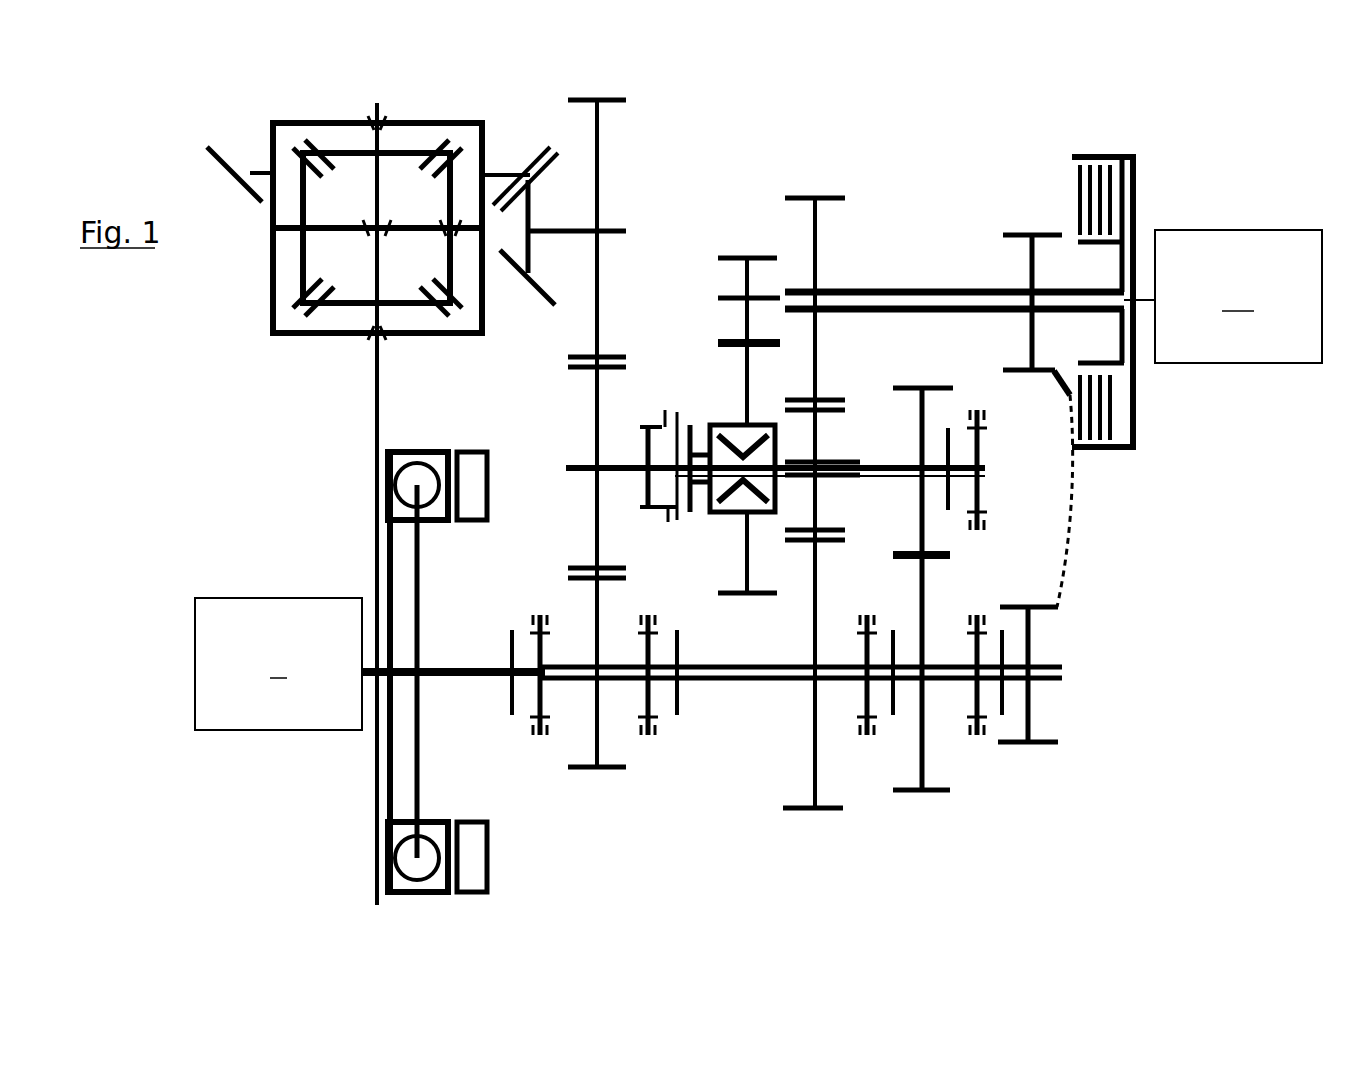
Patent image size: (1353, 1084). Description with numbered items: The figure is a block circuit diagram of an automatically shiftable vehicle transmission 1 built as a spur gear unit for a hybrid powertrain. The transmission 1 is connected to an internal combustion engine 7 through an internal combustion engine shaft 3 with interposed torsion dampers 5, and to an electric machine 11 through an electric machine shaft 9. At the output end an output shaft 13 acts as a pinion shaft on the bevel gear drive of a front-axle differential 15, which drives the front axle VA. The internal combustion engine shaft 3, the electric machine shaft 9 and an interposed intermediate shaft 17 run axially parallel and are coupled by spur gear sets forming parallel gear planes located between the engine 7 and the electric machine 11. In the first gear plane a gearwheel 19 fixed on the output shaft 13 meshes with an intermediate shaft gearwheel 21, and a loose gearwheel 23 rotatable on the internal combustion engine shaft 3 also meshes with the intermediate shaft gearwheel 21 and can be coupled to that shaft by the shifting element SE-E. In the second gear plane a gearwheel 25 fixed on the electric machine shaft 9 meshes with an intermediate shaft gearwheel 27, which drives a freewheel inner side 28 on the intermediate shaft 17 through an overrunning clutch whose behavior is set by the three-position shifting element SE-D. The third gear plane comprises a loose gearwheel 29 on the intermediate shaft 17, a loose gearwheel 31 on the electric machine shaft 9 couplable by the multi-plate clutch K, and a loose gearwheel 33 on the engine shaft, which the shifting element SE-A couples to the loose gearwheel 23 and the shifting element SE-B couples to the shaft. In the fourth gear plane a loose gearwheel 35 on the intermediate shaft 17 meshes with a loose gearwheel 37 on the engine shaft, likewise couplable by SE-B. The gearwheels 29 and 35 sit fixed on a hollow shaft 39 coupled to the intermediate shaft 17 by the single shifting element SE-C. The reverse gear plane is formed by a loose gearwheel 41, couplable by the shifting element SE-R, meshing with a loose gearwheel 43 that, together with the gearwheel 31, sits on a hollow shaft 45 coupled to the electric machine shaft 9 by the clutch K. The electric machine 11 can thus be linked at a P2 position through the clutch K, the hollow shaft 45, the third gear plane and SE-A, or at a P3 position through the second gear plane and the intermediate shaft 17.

The vehicle transmission 1 is at (984, 874).
The internal combustion engine shaft 3 is at (465, 667).
The torsion dampers 5 is at (420, 893).
The internal combustion engine 7 is at (278, 664).
The electric machine shaft 9 is at (1143, 295).
The electric machine 11 is at (1238, 296).
The output shaft 13 is at (612, 231).
The front-axle differential 15 is at (308, 123).
The intermediate shaft 17 is at (980, 466).
The gearwheel 19 is at (612, 100).
The intermediate shaft gearwheel 21 is at (596, 418).
The loose gearwheel 23 is at (595, 598).
The gearwheel 25 is at (745, 265).
The intermediate shaft gearwheel 27 is at (745, 368).
The freewheel inner side 28 is at (730, 515).
The loose gearwheel 29 is at (820, 430).
The loose gearwheel 31 is at (820, 228).
The loose gearwheel 33 is at (818, 580).
The loose gearwheel 35 is at (922, 388).
The loose gearwheel 37 is at (925, 590).
The hollow shaft 39 is at (880, 480).
The loose gearwheel 41 is at (1030, 692).
The loose gearwheel 43 is at (1020, 235).
The hollow shaft 45 is at (935, 290).
The multi-plate clutch K is at (1089, 298).
The front axle VA is at (377, 420).
The P2 position P2 is at (597, 820).
The P3 position P3 is at (545, 466).
The shifting element SE-A is at (647, 687).
The shifting element SE-B is at (868, 687).
The shifting element SE-C is at (971, 484).
The shifting element SE-D is at (662, 453).
The shifting element SE-E is at (534, 687).
The shifting element SE-R is at (974, 687).